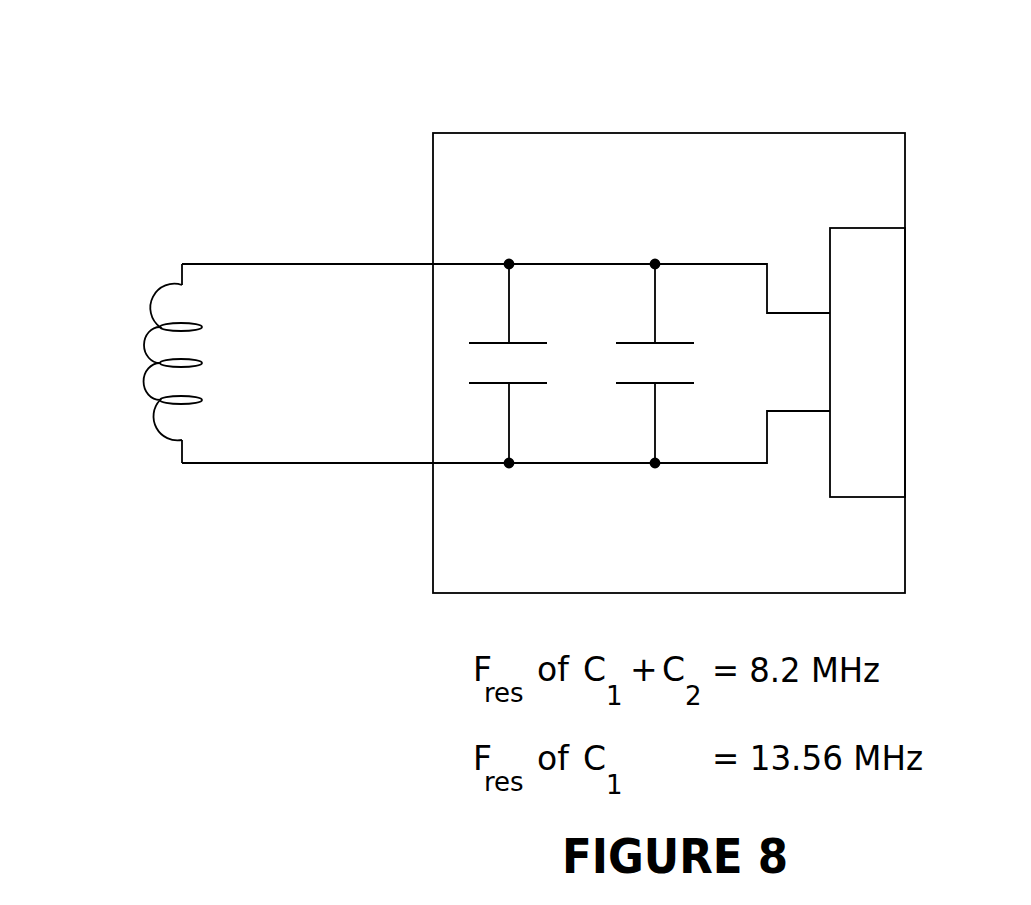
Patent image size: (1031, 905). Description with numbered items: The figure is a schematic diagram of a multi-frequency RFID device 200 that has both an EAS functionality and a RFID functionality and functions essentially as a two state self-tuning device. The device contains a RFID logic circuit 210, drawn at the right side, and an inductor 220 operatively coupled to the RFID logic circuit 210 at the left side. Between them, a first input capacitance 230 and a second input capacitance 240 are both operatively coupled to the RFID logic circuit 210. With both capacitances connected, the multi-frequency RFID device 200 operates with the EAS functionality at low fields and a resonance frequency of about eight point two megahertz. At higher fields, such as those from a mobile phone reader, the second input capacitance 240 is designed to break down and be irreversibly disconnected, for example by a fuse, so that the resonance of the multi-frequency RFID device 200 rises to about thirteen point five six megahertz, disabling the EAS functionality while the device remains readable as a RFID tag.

The multi-frequency RFID device 200 is at (690, 105).
The RFID logic circuit 210 is at (875, 377).
The inductor 220 is at (148, 413).
The first input capacitance (C1) 230 is at (523, 328).
The second input capacitance (C2) 240 is at (668, 332).